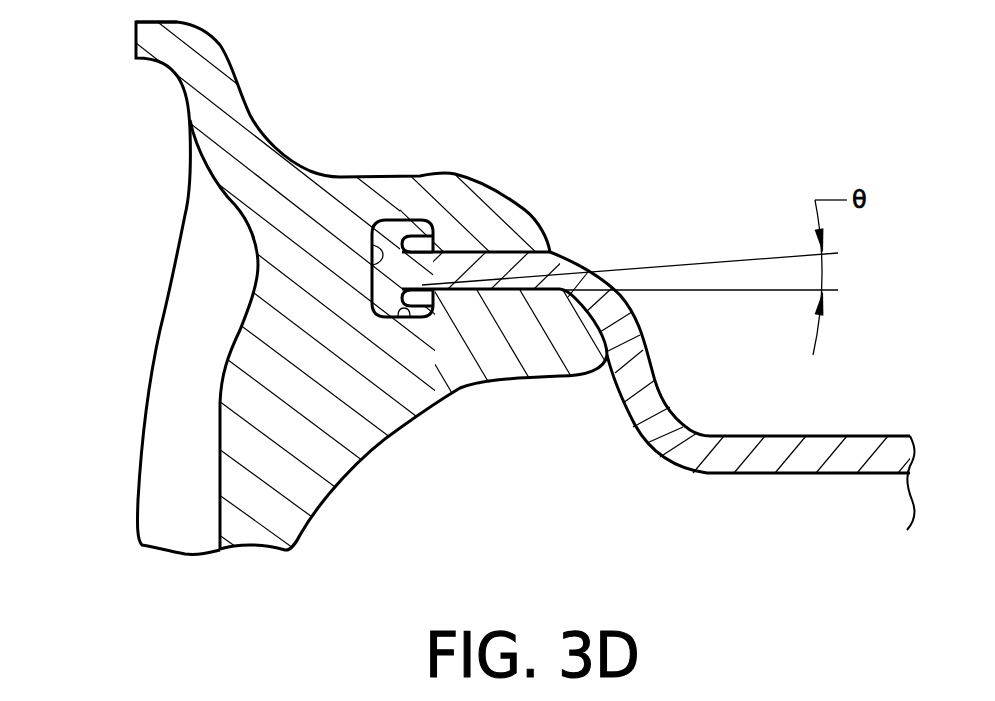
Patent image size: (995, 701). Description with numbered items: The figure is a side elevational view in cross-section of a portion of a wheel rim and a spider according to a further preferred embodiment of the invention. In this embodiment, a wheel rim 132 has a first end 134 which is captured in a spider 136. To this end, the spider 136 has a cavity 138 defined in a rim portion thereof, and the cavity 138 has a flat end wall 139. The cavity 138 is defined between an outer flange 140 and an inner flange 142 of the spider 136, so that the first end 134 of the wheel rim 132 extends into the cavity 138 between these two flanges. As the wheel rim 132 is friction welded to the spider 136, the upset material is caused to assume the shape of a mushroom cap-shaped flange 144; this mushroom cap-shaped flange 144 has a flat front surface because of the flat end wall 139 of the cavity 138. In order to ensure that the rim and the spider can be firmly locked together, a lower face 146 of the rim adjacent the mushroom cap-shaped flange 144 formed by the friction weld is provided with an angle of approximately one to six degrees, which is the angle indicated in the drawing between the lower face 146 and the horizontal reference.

The wheel rim 132 is at (735, 478).
The first end 134 is at (487, 262).
The spider 136 is at (142, 410).
The cavity 138 is at (397, 318).
The flat end wall 139 is at (371, 247).
The outer flange 140 is at (442, 183).
The inner flange 142 is at (540, 363).
The mushroom cap-shaped flange 144 is at (377, 220).
The lower face 146 is at (457, 292).